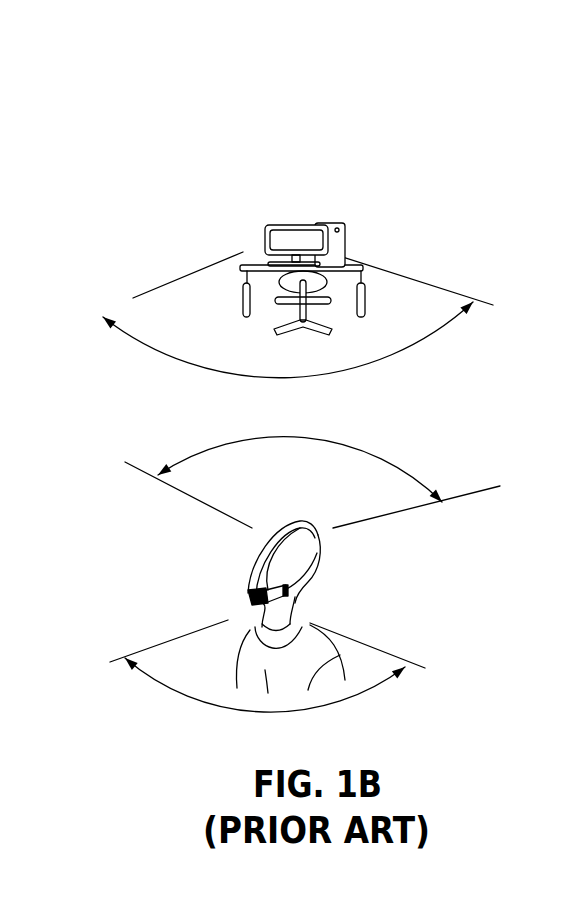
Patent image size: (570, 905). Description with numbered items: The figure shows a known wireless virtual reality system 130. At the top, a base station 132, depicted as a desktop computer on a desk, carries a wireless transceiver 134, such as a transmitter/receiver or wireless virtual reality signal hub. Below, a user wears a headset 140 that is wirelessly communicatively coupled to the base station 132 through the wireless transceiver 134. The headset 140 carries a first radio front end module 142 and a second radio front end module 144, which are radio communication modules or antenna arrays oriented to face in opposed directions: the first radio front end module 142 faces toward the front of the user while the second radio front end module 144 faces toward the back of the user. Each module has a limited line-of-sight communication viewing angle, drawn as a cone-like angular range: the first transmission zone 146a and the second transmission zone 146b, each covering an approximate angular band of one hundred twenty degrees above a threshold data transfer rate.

The wireless virtual reality system 130 is at (467, 125).
The base station 132 is at (327, 223).
The wireless transceiver 134 is at (285, 226).
The headset 140 is at (323, 545).
The first radio front end module 142 is at (300, 522).
The second radio front end module 144 is at (247, 592).
The first transmission zone 146a is at (403, 463).
The second transmission zone 146b is at (372, 663).